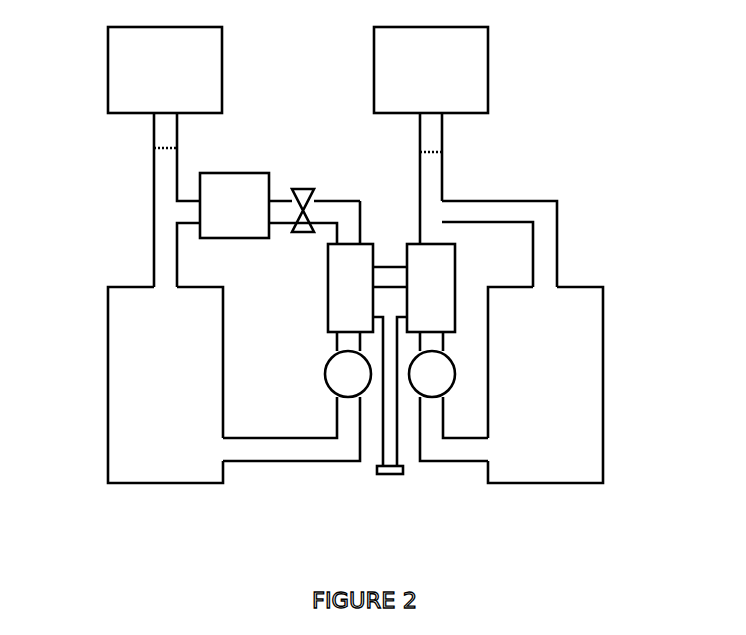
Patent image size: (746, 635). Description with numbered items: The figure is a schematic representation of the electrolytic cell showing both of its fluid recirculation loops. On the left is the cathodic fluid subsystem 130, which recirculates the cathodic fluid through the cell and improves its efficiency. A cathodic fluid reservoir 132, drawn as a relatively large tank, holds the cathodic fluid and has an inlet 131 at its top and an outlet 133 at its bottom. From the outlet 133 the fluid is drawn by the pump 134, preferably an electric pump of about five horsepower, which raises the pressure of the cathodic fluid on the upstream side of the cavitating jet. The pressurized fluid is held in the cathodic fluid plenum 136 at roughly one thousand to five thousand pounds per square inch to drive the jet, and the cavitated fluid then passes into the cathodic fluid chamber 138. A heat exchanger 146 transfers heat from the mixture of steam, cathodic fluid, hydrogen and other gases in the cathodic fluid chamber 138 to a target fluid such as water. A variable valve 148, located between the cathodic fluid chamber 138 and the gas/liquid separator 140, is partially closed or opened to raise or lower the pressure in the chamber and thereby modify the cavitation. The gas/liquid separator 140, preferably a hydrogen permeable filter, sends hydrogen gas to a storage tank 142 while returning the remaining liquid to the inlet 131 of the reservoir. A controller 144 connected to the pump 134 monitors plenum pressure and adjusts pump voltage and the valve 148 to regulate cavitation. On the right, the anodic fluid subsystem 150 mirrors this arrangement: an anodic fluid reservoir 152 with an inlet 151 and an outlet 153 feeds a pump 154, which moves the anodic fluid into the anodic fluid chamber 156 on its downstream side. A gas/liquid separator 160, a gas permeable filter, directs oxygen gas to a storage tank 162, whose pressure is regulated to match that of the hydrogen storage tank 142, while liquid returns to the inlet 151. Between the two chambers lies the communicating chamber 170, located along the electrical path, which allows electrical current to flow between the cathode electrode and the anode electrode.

The cathodic fluid subsystem 130 is at (302, 114).
The inlet 131 is at (165, 282).
The cathodic fluid reservoir 132 is at (130, 375).
The outlet 133 is at (228, 452).
The pump 134 is at (338, 378).
The cathodic fluid plenum 136 is at (338, 308).
The cathodic fluid chamber 138 is at (338, 260).
The gas/liquid separator 140 is at (163, 150).
The storage tank 142 is at (130, 62).
The controller 144 is at (393, 474).
The heat exchanger 146 is at (252, 218).
The variable valve 148 is at (303, 187).
The anodic fluid subsystem 150 is at (602, 134).
The inlet 151 is at (547, 287).
The anodic fluid reservoir 152 is at (578, 400).
The outlet 153 is at (485, 450).
The pump 154 is at (438, 378).
The anodic fluid chamber 156 is at (417, 258).
The gas/liquid separator 160 is at (442, 152).
The storage tank 162 is at (453, 88).
The communicating chamber 170 is at (393, 267).